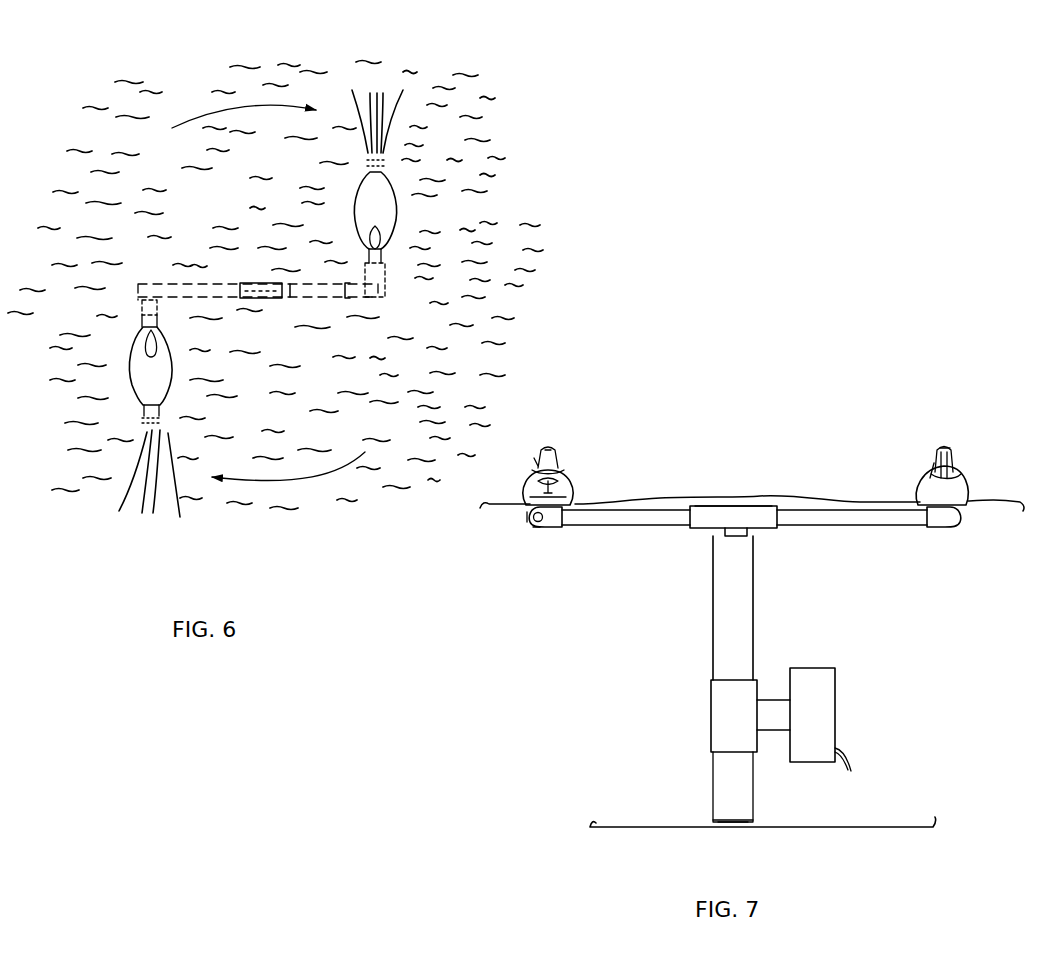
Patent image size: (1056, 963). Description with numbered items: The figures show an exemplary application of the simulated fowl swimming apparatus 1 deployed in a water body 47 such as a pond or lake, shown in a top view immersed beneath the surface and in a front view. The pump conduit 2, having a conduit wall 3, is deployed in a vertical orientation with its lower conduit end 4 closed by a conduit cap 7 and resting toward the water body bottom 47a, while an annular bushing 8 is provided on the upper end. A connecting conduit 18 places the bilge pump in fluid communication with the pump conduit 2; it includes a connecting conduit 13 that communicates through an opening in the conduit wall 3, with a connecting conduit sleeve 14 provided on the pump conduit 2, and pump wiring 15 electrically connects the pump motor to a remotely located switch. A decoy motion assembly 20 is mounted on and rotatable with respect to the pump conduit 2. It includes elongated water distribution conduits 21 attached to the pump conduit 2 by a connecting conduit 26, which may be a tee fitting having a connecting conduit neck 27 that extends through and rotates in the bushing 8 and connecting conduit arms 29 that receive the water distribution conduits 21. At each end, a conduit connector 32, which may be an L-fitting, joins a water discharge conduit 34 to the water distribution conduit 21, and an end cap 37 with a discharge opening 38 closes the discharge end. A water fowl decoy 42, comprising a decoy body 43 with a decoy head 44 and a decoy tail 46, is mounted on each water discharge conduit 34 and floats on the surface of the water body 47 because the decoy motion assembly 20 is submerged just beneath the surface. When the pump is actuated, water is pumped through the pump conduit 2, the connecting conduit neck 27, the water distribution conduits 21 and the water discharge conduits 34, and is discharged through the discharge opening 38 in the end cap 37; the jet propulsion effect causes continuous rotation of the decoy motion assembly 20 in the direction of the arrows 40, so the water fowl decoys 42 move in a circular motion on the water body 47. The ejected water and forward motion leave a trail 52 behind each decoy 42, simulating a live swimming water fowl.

In FIG. 6, the simulated fowl swimming apparatus 1 is at (465, 174).
In FIG. 7, the simulated fowl swimming apparatus 1 is at (691, 449).
In FIG. 7, the pump conduit 2 is at (759, 688).
In FIG. 7, the conduit wall 3 is at (740, 632).
In FIG. 7, the lower conduit end 4 is at (748, 826).
In FIG. 7, the conduit cap 7 is at (722, 822).
In FIG. 7, the annular bushing 8 is at (735, 538).
In FIG. 7, the connecting conduit 13 is at (771, 708).
In FIG. 7, the connecting conduit sleeve 14 is at (725, 709).
In FIG. 7, the pump wiring 15 is at (845, 752).
In FIG. 7, the connecting conduit 18 is at (710, 725).
In FIG. 6, the decoy motion assembly 20 is at (219, 272).
In FIG. 7, the decoy motion assembly 20 is at (700, 527).
In FIG. 7, the water distribution conduit 21 is at (630, 531).
In FIG. 7, the connecting conduit 26 is at (764, 496).
In FIG. 7, the connecting conduit neck 27 is at (733, 523).
In FIG. 7, the connecting conduit arm 29 is at (700, 530).
In FIG. 7, the conduit connector 32 is at (560, 529).
In FIG. 7, the water discharge conduit 34 is at (523, 524).
In FIG. 7, the end cap 37 is at (533, 518).
In FIG. 7, the discharge opening 38 is at (535, 528).
In FIG. 6, the arrows 40 is at (290, 103).
In FIG. 6, the water fowl decoy 42 is at (400, 224).
In FIG. 7, the water fowl decoy 42 is at (578, 473).
In FIG. 7, the decoy body 43 is at (545, 452).
In FIG. 7, the decoy head 44 is at (544, 454).
In FIG. 7, the decoy tail 46 is at (548, 492).
In FIG. 6, the water body 47 is at (196, 85).
In FIG. 7, the water body 47 is at (850, 502).
In FIG. 7, the water body bottom 47a is at (915, 826).
In FIG. 6, the trail 52 is at (405, 102).